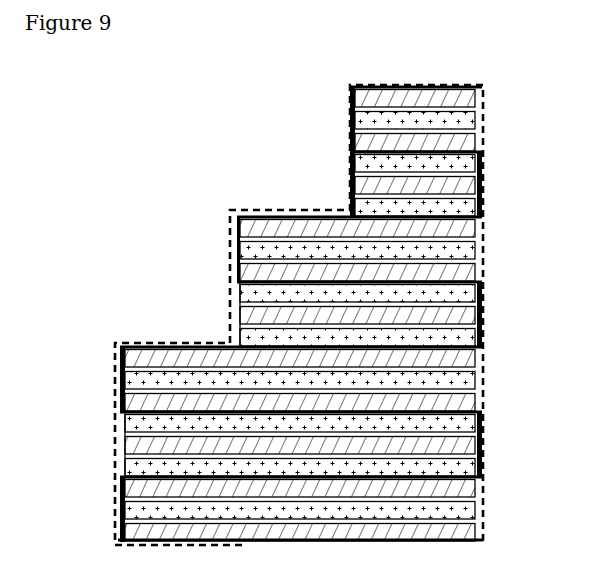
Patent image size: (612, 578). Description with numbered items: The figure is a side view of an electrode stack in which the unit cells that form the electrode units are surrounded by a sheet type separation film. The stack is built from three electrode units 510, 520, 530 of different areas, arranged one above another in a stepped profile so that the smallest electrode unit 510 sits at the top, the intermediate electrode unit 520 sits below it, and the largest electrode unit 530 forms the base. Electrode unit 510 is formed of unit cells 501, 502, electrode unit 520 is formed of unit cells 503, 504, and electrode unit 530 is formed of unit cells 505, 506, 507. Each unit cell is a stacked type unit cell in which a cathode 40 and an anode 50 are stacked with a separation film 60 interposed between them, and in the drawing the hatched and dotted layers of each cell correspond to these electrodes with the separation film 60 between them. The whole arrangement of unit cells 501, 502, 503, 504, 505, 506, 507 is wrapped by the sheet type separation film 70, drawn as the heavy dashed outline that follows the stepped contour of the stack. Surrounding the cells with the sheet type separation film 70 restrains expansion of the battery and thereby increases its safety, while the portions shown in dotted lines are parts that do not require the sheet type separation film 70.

The cathode 40 is at (457, 116).
The anode 50 is at (417, 91).
The separation film 60 is at (380, 85).
The sheet type separation film 70 is at (272, 209).
The unit cell 501 is at (443, 102).
The unit cell 502 is at (443, 184).
The unit cell 503 is at (477, 250).
The unit cell 504 is at (386, 314).
The unit cell 505 is at (477, 380).
The unit cell 506 is at (480, 444).
The unit cell 507 is at (327, 509).
The electrode unit 510 is at (467, 134).
The electrode unit 520 is at (411, 282).
The electrode unit 530 is at (351, 444).